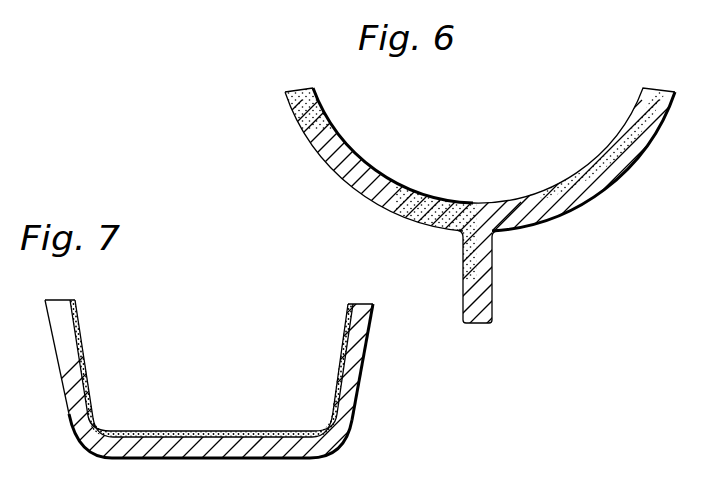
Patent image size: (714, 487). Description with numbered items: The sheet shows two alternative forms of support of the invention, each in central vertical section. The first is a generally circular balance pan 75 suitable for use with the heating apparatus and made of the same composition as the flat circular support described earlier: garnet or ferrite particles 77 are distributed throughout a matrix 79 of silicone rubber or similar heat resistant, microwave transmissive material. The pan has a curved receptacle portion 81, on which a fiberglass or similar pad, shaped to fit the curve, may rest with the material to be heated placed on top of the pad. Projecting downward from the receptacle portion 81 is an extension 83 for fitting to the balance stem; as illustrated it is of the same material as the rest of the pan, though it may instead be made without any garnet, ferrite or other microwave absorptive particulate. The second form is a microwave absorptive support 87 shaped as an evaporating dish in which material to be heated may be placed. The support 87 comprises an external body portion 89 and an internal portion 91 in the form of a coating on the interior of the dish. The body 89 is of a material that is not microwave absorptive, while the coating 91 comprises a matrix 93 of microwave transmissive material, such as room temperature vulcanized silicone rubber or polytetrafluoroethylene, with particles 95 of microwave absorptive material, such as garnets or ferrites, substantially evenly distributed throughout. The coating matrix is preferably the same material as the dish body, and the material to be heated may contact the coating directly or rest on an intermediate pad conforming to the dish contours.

In FIG. 6, the balance pan 75 is at (582, 212).
In FIG. 6, the garnet or ferrite particles 77 is at (615, 163).
In FIG. 6, the matrix 79 is at (539, 198).
In FIG. 6, the receptacle portion 81 is at (342, 135).
In FIG. 6, the extension 83 is at (492, 298).
In FIG. 7, the microwave absorptive support 87 is at (346, 446).
In FIG. 7, the external body portion 89 is at (358, 396).
In FIG. 7, the internal portion 91 is at (84, 357).
In FIG. 7, the matrix 93 is at (331, 413).
In FIG. 7, the particles 95 is at (348, 320).